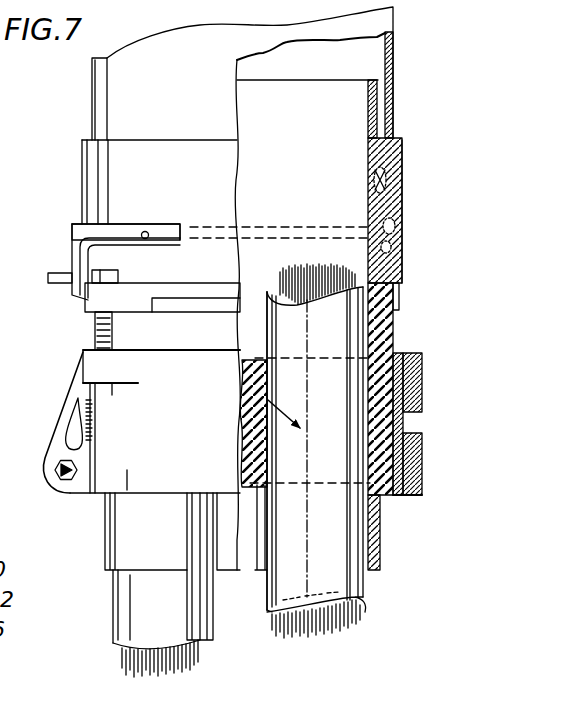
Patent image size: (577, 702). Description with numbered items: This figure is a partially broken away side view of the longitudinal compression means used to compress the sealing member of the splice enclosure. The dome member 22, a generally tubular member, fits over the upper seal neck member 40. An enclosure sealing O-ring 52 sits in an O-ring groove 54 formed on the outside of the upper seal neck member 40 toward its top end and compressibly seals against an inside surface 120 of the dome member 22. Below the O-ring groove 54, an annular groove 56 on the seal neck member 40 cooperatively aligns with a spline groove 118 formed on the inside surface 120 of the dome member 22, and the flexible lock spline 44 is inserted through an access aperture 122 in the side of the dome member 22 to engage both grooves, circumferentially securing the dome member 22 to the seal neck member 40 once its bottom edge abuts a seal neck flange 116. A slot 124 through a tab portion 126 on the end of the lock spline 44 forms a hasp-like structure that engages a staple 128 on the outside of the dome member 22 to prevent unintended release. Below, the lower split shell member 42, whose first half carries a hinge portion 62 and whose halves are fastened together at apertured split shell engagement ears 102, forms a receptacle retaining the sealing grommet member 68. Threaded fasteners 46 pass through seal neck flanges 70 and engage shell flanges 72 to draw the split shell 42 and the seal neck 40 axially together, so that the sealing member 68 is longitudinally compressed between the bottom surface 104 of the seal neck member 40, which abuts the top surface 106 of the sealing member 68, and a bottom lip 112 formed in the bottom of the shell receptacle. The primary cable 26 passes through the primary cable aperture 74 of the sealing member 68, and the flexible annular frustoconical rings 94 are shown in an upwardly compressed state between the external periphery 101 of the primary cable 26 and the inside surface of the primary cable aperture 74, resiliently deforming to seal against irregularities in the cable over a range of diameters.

The dome member 22 is at (393, 84).
The primary cable 26 is at (370, 594).
The upper seal neck member 40 is at (382, 337).
The lower split shell member 42 is at (426, 447).
The lock spline 44 is at (400, 224).
The threaded fasteners 46 is at (96, 337).
The enclosure sealing O-ring 52 is at (401, 180).
The O-ring groove 54 is at (377, 183).
The annular groove 56 is at (368, 250).
The hinge portion 62 is at (421, 494).
The sealing grommet member 68 is at (405, 388).
The seal neck flanges 70 is at (98, 298).
The shell flanges 72 is at (95, 363).
The primary cable aperture 74 is at (250, 383).
The flexible annular frustoconical rings 94 is at (246, 457).
The external periphery 101 is at (267, 608).
The split shell engagement ears 102 is at (62, 452).
The bottom surface 104 is at (422, 357).
The top surface 106 is at (367, 342).
The bottom lip 112 is at (382, 497).
The seal neck flange 116 is at (399, 293).
The spline groove 118 is at (402, 254).
The inside surface 120 is at (382, 124).
The access aperture 122 is at (147, 238).
The slot 124 is at (72, 232).
The tab portion 126 is at (72, 226).
The staple 128 is at (63, 275).